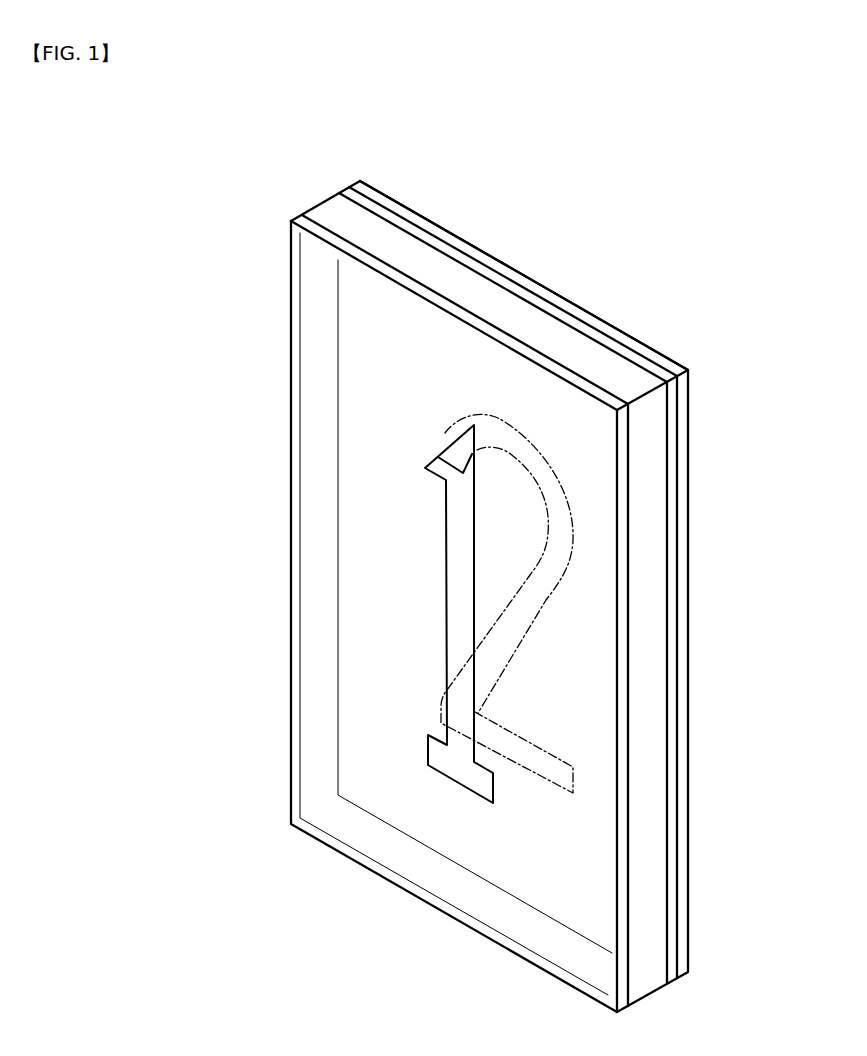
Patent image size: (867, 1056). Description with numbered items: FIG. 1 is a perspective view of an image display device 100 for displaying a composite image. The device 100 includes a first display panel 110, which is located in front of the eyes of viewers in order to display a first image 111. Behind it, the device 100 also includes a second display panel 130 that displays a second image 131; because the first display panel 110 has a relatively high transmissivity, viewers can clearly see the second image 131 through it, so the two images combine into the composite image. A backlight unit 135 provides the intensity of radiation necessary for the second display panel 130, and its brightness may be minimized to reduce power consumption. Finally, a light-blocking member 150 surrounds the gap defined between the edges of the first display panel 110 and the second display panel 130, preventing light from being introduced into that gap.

The image display device 100 is at (196, 264).
The first display panel 110 is at (289, 683).
The first image 111 is at (447, 562).
The second display panel 130 is at (545, 305).
The second image 131 is at (560, 483).
The backlight unit 135 is at (522, 271).
The light-blocking member 150 is at (313, 203).